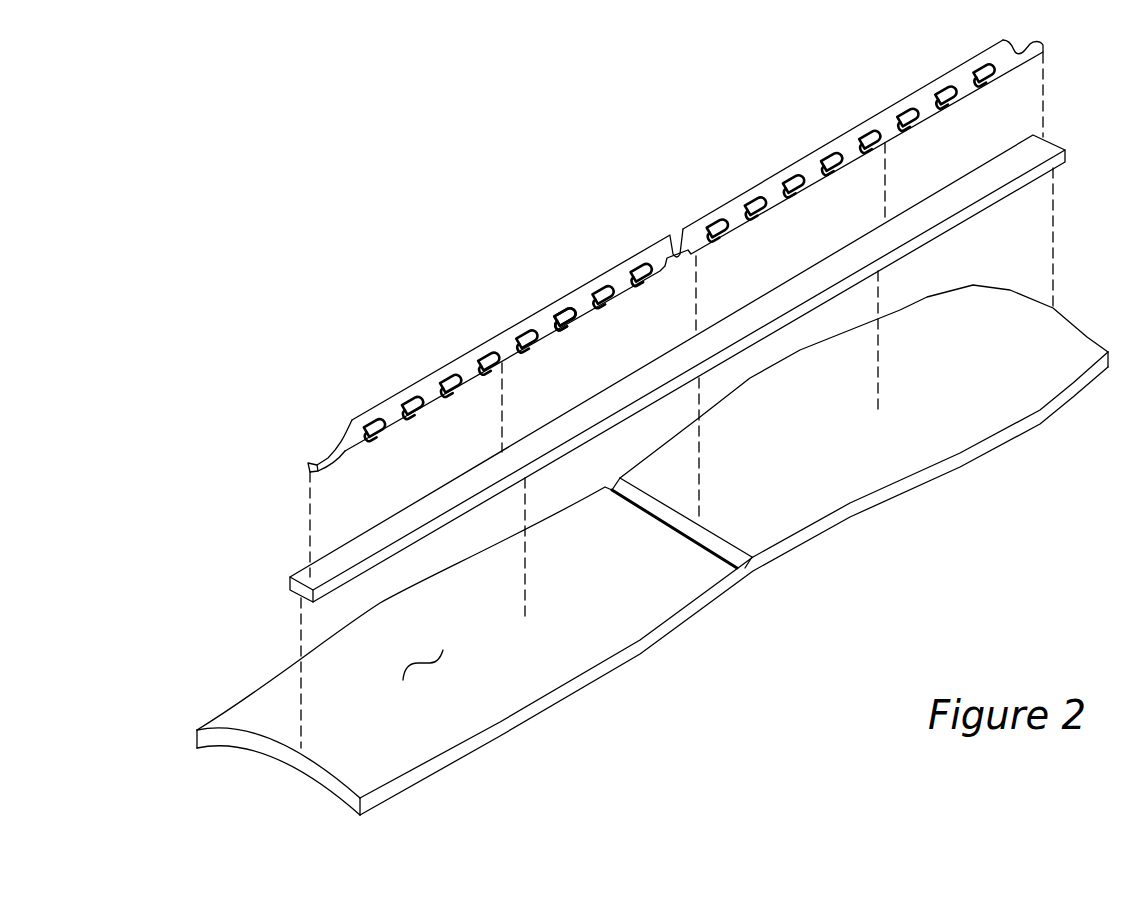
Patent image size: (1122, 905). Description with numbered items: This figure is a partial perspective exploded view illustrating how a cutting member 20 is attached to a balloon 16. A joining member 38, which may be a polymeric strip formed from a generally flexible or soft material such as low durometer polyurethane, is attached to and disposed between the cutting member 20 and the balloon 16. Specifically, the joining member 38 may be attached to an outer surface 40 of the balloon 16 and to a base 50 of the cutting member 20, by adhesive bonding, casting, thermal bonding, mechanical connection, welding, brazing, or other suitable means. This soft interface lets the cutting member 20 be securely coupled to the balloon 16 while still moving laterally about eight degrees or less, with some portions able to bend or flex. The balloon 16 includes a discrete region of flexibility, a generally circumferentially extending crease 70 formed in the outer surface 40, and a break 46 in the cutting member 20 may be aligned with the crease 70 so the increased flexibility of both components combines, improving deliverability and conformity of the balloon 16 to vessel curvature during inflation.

The balloon 16 is at (280, 715).
The cutting member 20 is at (382, 398).
The joining member 38 is at (303, 575).
The outer surface 40 is at (423, 663).
The break 46 is at (670, 228).
The base 50 is at (556, 337).
The crease 70 is at (748, 566).